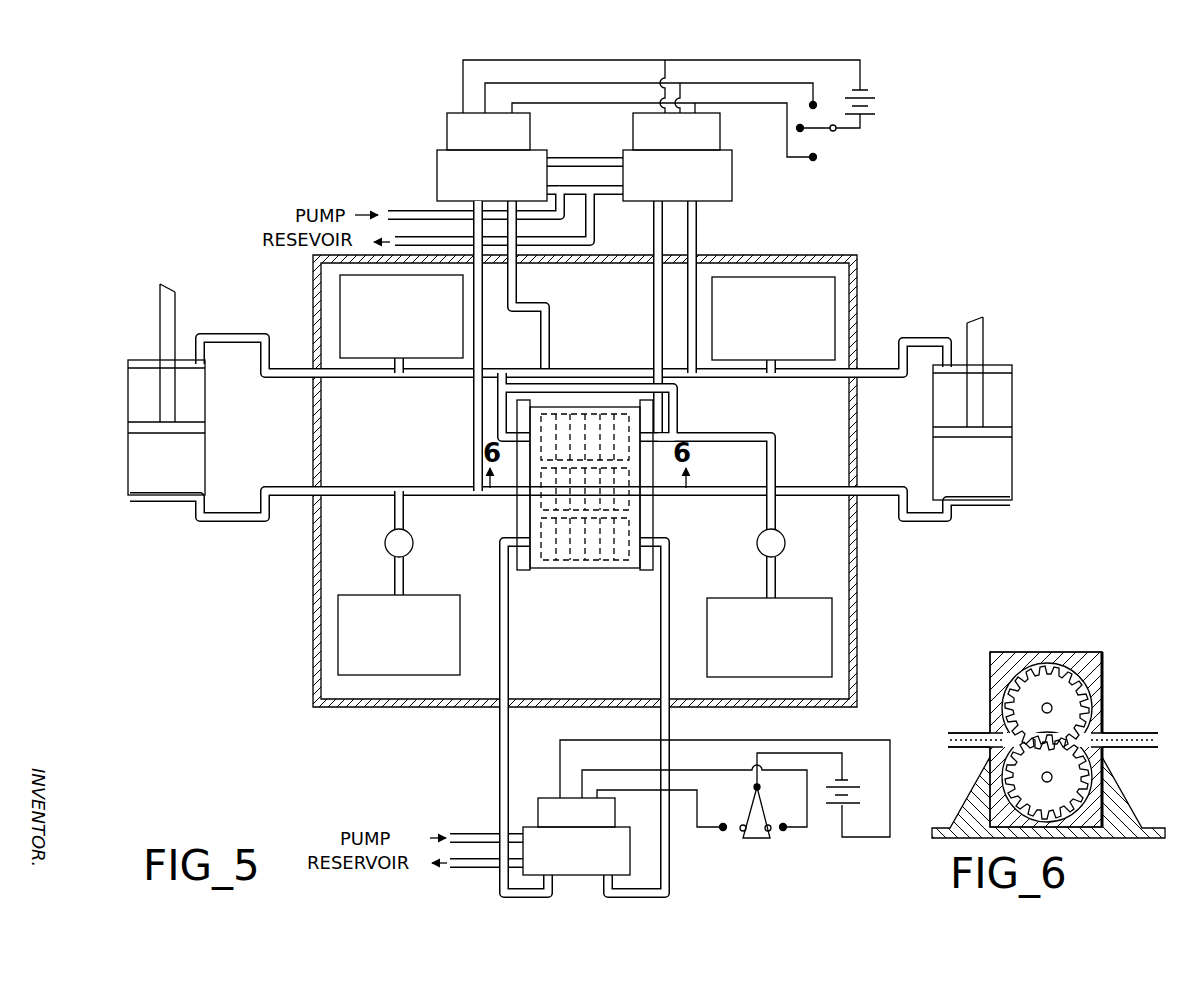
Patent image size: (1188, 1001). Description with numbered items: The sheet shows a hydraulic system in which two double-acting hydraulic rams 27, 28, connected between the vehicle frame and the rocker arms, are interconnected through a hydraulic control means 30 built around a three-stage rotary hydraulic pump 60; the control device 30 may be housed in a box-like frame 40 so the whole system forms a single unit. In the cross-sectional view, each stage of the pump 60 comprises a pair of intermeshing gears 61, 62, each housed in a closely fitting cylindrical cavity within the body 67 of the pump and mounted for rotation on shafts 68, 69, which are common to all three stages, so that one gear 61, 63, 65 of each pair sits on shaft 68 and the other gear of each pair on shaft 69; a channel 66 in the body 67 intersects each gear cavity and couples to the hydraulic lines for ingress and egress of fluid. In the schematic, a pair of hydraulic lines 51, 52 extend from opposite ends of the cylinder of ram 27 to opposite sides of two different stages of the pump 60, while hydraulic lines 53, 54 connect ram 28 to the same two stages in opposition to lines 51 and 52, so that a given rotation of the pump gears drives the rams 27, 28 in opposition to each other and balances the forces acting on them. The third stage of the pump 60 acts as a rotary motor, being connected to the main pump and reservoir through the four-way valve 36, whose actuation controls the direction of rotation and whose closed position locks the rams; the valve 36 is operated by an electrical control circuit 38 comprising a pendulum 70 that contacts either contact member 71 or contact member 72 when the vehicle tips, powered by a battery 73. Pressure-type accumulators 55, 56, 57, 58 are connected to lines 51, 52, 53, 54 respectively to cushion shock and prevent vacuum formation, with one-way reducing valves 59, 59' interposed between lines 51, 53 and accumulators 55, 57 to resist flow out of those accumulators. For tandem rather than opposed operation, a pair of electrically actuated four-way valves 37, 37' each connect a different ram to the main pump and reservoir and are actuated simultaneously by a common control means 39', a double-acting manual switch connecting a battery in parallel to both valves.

In FIG. 5, the hydraulic ram 27 is at (128, 455).
In FIG. 5, the hydraulic ram 28 is at (1012, 455).
In FIG. 5, the hydraulic control means 30 is at (304, 552).
In FIG. 5, the four-way valve 36 is at (592, 878).
In FIG. 5, the four-way valve 37 is at (699, 275).
In FIG. 5, the four-way valve 37' is at (497, 302).
In FIG. 5, the electrical control circuit 38 is at (777, 842).
In FIG. 5, the common control means 39' is at (850, 129).
In FIG. 5, the compartment 40 is at (264, 675).
In FIG. 5, the hydraulic line 51 is at (270, 487).
In FIG. 6, the hydraulic line 51 is at (948, 733).
In FIG. 5, the hydraulic line 52 is at (252, 340).
In FIG. 5, the hydraulic line 53 is at (870, 487).
In FIG. 6, the hydraulic line 53 is at (1145, 733).
In FIG. 5, the hydraulic line 54 is at (870, 368).
In FIG. 5, the accumulator 55 is at (411, 645).
In FIG. 5, the accumulator 56 is at (414, 328).
In FIG. 5, the accumulator 57 is at (782, 647).
In FIG. 5, the accumulator 58 is at (786, 329).
In FIG. 5, the one-way reducing valve 59 is at (382, 543).
In FIG. 5, the one-way reducing valve 59' is at (790, 544).
In FIG. 5, the three-stage hydraulic pump 60 is at (588, 513).
In FIG. 6, the three-stage hydraulic pump 60 is at (1045, 719).
In FIG. 5, the gear 61 is at (545, 500).
In FIG. 6, the gear 61 is at (1050, 672).
In FIG. 6, the gear 62 is at (1070, 805).
In FIG. 5, the gear 63 is at (620, 533).
In FIG. 5, the gear 65 is at (600, 426).
In FIG. 6, the channel 66 is at (997, 735).
In FIG. 6, the pump body 67 is at (1000, 660).
In FIG. 5, the shaft 68 is at (592, 570).
In FIG. 6, the shaft 68 is at (1052, 708).
In FIG. 6, the shaft 69 is at (1052, 777).
In FIG. 5, the pendulum 70 is at (745, 840).
In FIG. 5, the contact member 71 is at (722, 832).
In FIG. 5, the contact member 72 is at (786, 832).
In FIG. 5, the battery 73 is at (858, 795).